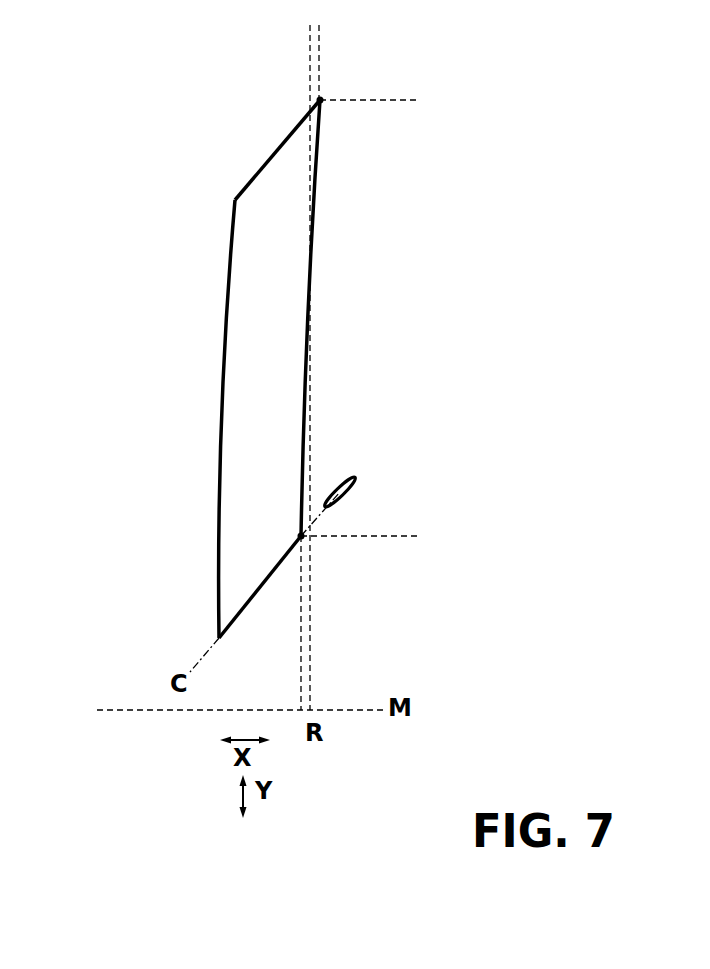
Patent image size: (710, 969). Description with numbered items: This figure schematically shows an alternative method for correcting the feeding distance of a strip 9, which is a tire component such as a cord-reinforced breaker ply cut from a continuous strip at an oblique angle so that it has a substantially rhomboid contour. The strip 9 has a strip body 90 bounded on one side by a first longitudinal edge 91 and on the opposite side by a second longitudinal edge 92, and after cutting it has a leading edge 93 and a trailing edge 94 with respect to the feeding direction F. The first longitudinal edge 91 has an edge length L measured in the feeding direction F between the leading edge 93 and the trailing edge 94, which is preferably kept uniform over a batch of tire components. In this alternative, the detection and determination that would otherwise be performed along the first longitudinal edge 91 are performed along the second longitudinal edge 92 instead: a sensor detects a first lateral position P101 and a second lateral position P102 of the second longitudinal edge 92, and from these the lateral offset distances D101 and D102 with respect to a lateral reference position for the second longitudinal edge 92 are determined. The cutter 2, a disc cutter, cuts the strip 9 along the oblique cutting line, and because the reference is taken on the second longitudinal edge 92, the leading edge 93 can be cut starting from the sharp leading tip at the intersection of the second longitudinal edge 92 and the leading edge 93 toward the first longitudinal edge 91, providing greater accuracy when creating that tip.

The cutter 2 is at (355, 478).
The strip 9 is at (292, 440).
The strip body 90 is at (288, 393).
The first longitudinal edge 91 is at (221, 422).
The second longitudinal edge 92 is at (307, 343).
The leading edge 93 is at (265, 164).
The trailing edge 94 is at (258, 591).
The first lateral position P101 is at (320, 100).
The second lateral position P102 is at (301, 536).
The lateral offset distance D101 is at (287, 43).
The lateral offset distance D102 is at (278, 600).
The edge length L is at (405, 536).
The feeding direction F is at (267, 272).